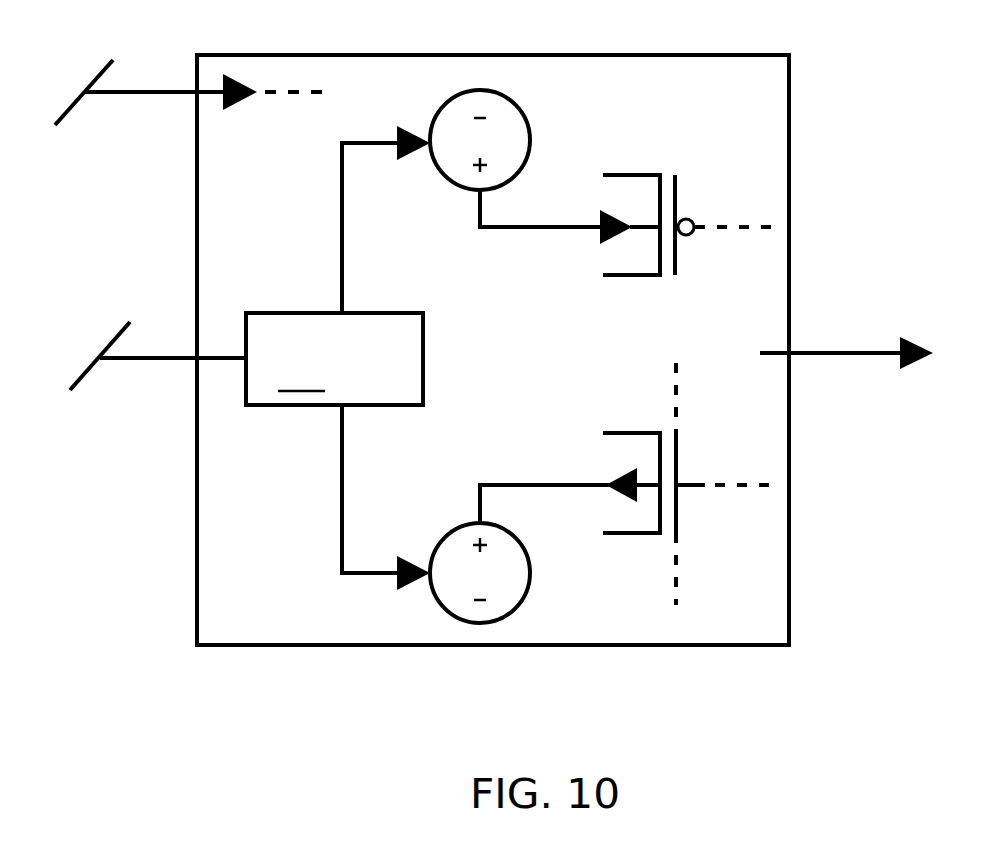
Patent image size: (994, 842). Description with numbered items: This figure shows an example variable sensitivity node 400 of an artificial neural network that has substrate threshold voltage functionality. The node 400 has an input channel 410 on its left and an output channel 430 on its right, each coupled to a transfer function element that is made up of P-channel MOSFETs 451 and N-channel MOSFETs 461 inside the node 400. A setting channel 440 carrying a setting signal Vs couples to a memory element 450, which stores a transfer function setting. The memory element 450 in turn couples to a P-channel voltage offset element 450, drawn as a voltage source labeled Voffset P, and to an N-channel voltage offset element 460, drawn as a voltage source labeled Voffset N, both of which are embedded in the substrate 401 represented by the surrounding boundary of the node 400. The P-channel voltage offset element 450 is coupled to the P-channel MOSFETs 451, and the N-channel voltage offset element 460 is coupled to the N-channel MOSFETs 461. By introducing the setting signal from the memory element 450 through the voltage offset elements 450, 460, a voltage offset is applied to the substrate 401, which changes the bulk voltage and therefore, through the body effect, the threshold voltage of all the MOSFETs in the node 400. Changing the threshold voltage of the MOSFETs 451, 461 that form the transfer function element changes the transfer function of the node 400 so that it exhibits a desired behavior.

The variable sensitivity node 400 is at (780, 94).
The substrate 401 is at (746, 143).
The input channel 410 is at (120, 93).
The output channel 430 is at (815, 355).
The setting channel 440 is at (130, 360).
The memory element 450 is at (440, 100).
The P-channel MOSFET 451 is at (780, 215).
The N-channel voltage offset element 460 is at (500, 620).
The N-channel MOSFET 461 is at (775, 490).